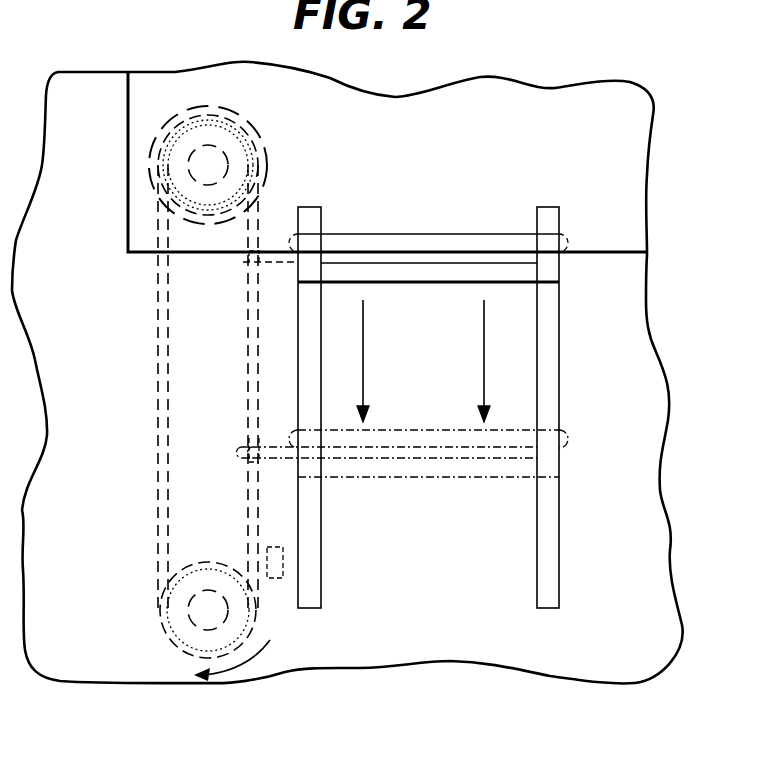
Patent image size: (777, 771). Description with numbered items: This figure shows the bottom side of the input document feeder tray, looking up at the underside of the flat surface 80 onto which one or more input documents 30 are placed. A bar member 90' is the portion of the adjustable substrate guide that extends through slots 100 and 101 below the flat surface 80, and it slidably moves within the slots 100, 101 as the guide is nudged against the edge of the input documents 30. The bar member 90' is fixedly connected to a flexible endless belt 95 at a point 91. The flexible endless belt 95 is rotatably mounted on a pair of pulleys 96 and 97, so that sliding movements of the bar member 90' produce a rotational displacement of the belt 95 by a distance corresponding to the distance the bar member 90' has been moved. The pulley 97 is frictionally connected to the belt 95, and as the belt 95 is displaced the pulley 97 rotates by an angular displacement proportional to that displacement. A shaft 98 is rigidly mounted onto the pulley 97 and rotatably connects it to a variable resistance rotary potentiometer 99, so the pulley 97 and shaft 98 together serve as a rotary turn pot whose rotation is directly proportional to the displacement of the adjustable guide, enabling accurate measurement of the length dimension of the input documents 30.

The input documents 30 is at (620, 196).
The flat surface 80 is at (640, 462).
The bar member 90' is at (403, 335).
The point 91 is at (246, 263).
The flexible endless belt 95 is at (158, 357).
The pulley 96 is at (149, 620).
The pulley 97 is at (244, 129).
The shaft 98 is at (208, 165).
The variable resistance rotary potentiometer 99 is at (265, 173).
The slot 100 is at (312, 608).
The slot 101 is at (559, 357).